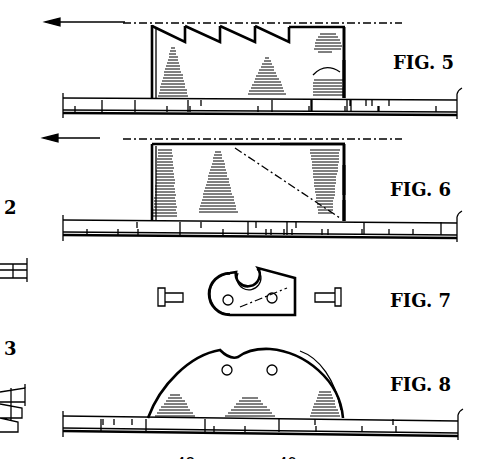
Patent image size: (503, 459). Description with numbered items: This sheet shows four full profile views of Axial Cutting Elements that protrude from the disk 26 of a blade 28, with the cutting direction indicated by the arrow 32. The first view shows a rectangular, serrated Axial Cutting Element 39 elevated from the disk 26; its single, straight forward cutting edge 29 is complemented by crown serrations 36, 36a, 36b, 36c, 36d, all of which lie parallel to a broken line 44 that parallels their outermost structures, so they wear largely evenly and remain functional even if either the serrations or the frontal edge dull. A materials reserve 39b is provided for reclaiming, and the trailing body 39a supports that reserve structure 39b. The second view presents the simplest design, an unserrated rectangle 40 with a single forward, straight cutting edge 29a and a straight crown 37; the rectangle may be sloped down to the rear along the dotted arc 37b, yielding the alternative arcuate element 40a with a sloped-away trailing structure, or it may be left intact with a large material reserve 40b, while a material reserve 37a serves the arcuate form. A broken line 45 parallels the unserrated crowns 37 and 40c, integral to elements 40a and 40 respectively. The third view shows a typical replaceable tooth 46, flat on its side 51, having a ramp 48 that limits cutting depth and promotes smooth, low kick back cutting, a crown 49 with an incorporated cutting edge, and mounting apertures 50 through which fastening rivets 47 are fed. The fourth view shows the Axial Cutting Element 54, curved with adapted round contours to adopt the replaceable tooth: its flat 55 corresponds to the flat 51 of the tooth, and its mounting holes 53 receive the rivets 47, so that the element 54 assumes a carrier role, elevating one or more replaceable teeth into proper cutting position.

In FIG. 5, the disk 26 is at (122, 98).
In FIG. 6, the disk 26 is at (130, 221).
In FIG. 8, the disk 26 is at (112, 417).
In FIG. 5, the blade 28 is at (223, 115).
In FIG. 6, the blade 28 is at (222, 236).
In FIG. 8, the blade 28 is at (223, 434).
In FIG. 5, the forward cutting edge 29 is at (150, 63).
In FIG. 6, the forward cutting edge 29a is at (148, 183).
In FIG. 5, the arrow 32 is at (73, 24).
In FIG. 6, the arrow 32 is at (59, 141).
In FIG. 5, the crown serration 36 is at (200, 21).
In FIG. 5, the crown serration 36a is at (174, 25).
In FIG. 5, the crown serration 36b is at (213, 25).
In FIG. 5, the crown serration 36c is at (249, 24).
In FIG. 5, the crown serration 36d is at (277, 21).
In FIG. 6, the straight crown 37 is at (225, 170).
In FIG. 6, the material reserve 37a is at (246, 183).
In FIG. 6, the arc 37b is at (296, 184).
In FIG. 5, the rectangular Axial Cutting Element 39 is at (339, 51).
In FIG. 5, the trailing body 39a is at (346, 80).
In FIG. 5, the materials reserve 39b is at (316, 29).
In FIG. 6, the unserrated rectangle 40 is at (339, 178).
In FIG. 6, the arcuate Axial Cutting Element 40a is at (347, 216).
In FIG. 6, the material reserve 40b is at (347, 170).
In FIG. 6, the unserrated crown 40c is at (294, 143).
In FIG. 5, the broken line 44 is at (277, 26).
In FIG. 6, the broken line 45 is at (276, 144).
In FIG. 7, the replaceable tooth 46 is at (240, 299).
In FIG. 7, the fastening rivets 47 is at (173, 287).
In FIG. 7, the ramp 48 is at (228, 277).
In FIG. 7, the crown 49 is at (267, 268).
In FIG. 7, the mounting apertures 50 is at (212, 308).
In FIG. 7, the flat 51 is at (230, 315).
In FIG. 8, the mounting holes 53 is at (223, 375).
In FIG. 8, the Axial Cutting Element 54 is at (318, 367).
In FIG. 8, the flat 55 is at (251, 382).